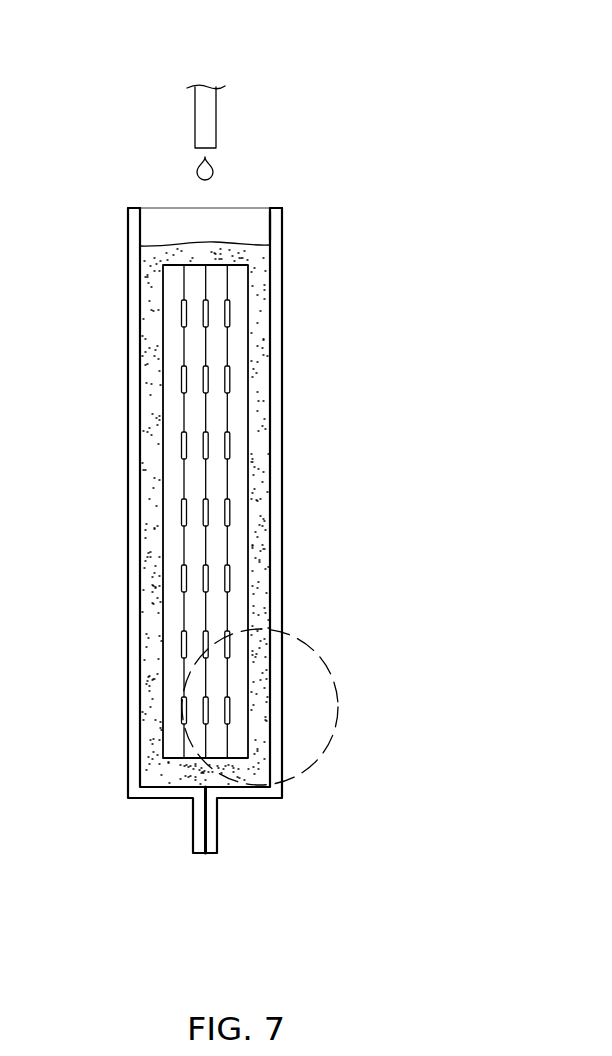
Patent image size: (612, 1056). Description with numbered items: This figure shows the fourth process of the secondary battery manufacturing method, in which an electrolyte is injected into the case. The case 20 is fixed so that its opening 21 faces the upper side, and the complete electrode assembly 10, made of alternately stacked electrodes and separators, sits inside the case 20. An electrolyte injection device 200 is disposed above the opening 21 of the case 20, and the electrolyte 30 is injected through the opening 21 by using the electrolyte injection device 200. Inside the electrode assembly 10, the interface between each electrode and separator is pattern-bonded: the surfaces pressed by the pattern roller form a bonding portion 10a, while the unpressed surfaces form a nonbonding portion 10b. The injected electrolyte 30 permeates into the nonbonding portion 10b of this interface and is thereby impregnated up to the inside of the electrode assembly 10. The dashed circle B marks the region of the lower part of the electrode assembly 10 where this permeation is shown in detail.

The electrode assembly 10 is at (258, 511).
The bonding portion 10a is at (227, 581).
The nonbonding portion 10b is at (227, 610).
The case 20 is at (298, 436).
The opening 21 is at (268, 235).
The electrolyte 30 is at (187, 255).
The electrolyte injection device 200 is at (207, 117).
The enlarged region B is at (338, 698).